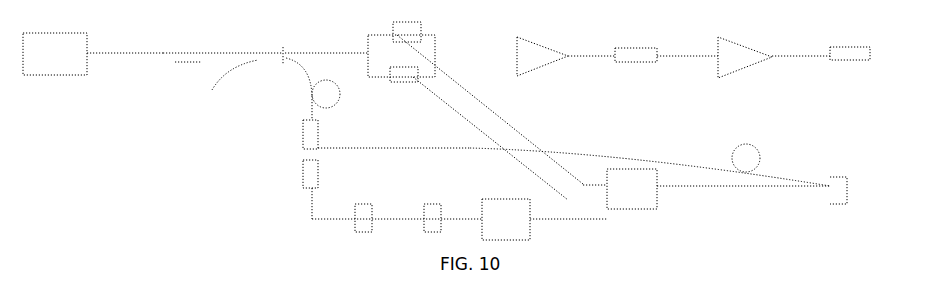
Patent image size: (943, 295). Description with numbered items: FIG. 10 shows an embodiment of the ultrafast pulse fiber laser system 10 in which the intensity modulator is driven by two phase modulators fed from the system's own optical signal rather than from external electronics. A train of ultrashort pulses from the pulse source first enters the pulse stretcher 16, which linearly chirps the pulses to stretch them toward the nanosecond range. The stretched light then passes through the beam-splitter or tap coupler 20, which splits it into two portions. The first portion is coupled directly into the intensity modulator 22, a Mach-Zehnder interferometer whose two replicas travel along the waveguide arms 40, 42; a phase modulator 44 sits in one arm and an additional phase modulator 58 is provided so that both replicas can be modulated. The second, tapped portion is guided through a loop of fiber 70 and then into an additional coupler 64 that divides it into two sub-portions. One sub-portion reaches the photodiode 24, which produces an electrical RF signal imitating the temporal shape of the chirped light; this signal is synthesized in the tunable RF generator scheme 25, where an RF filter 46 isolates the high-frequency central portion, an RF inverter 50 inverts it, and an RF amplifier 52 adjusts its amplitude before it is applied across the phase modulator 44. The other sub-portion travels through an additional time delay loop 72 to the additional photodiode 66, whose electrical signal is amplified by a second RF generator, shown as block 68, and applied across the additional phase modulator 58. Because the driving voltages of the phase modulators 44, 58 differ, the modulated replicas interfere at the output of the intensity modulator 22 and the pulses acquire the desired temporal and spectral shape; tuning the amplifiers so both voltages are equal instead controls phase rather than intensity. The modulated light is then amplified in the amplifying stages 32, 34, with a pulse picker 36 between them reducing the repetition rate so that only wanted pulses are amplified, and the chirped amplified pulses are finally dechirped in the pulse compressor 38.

The ultrafast pulse fiber laser system 10 is at (155, 115).
The pulse stretcher 16 is at (175, 61).
The beam-splitter or tap coupler 20 is at (277, 60).
The intensity modulator 22 is at (443, 48).
The photodiode 24 is at (303, 185).
The tunable RF generator scheme 25 is at (411, 136).
The amplifying stage 32 is at (544, 64).
The amplifying stage 34 is at (746, 64).
The pulse picker 36 is at (651, 57).
The pulse compressor 38 is at (857, 58).
The waveguide arm 40 is at (386, 40).
The waveguide arm 42 is at (392, 78).
The phase modulator 44 is at (471, 121).
The RF filter 46 is at (366, 206).
The RF inverter 50 is at (431, 206).
The RF amplifier 52 is at (517, 232).
The additional phase modulator 58 is at (409, 23).
The additional coupler 64 is at (305, 137).
The additional photodiode 66 is at (849, 184).
The controller 68 is at (647, 196).
The loop of fiber 70 is at (336, 98).
The additional time delay loop 72 is at (650, 154).